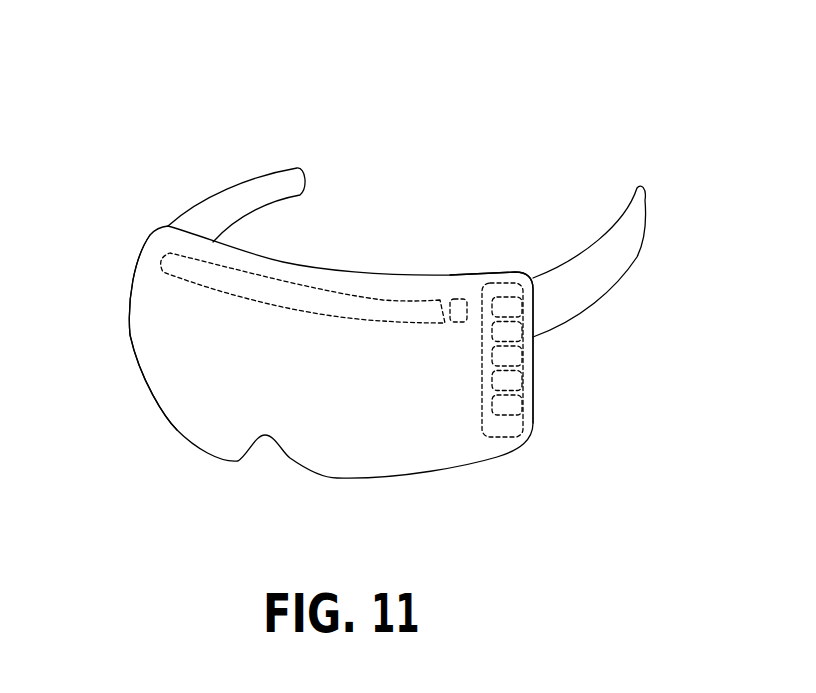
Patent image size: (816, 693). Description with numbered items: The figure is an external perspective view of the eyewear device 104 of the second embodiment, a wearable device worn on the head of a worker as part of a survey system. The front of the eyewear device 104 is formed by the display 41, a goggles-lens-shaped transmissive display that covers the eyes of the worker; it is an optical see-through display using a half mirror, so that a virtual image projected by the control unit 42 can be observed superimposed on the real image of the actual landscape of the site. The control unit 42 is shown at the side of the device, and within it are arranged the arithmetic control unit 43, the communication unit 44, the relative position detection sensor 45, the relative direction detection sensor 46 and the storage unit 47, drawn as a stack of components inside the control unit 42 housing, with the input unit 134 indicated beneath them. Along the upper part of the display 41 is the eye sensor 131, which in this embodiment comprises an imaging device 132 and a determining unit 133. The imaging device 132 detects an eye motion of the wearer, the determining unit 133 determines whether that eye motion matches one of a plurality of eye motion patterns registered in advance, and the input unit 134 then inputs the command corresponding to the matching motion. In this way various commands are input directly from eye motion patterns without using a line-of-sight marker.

The eyewear device 104 is at (435, 34).
The eye sensor 131 is at (400, 172).
The display 41 is at (153, 406).
The control unit 42 is at (500, 268).
The imaging device 132 is at (381, 299).
The determining unit 133 is at (457, 298).
The input unit 134 is at (525, 437).
The arithmetic control unit 43 is at (525, 303).
The communication unit 44 is at (525, 325).
The relative position detection sensor 45 is at (525, 347).
The relative direction detection sensor 46 is at (525, 368).
The storage unit 47 is at (525, 390).